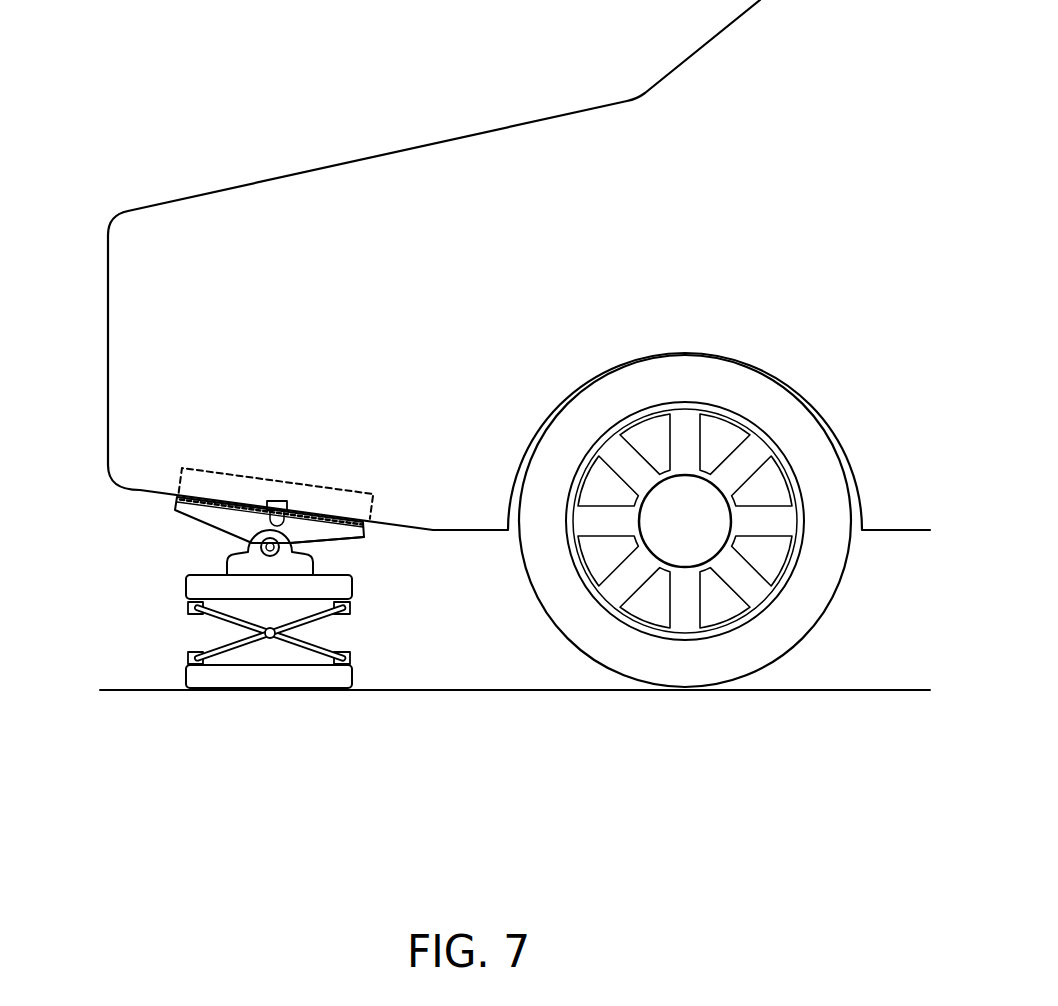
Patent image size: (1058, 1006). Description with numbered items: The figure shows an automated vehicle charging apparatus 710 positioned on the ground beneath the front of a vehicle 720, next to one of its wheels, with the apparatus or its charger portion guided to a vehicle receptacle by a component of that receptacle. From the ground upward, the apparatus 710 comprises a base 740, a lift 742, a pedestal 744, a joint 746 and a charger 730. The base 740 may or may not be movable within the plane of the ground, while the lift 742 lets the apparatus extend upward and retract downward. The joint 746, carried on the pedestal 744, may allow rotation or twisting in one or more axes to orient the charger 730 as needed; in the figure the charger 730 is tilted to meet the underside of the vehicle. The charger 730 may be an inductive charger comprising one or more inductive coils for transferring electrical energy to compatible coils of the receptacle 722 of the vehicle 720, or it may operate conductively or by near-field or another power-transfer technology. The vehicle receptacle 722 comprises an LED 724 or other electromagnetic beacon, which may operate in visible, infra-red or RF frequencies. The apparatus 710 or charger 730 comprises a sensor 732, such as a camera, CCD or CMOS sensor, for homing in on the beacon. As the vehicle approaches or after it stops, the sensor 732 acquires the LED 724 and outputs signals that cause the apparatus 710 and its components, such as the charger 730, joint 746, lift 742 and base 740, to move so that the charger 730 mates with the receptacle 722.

The apparatus 710 is at (146, 643).
The vehicle 720 is at (291, 157).
The receptacle 722 is at (259, 477).
The LED 724 is at (284, 500).
The charger 730 is at (177, 498).
The sensor 732 is at (318, 541).
The base 740 is at (352, 683).
The lift 742 is at (327, 615).
The pedestal 744 is at (352, 582).
The joint 746 is at (261, 546).